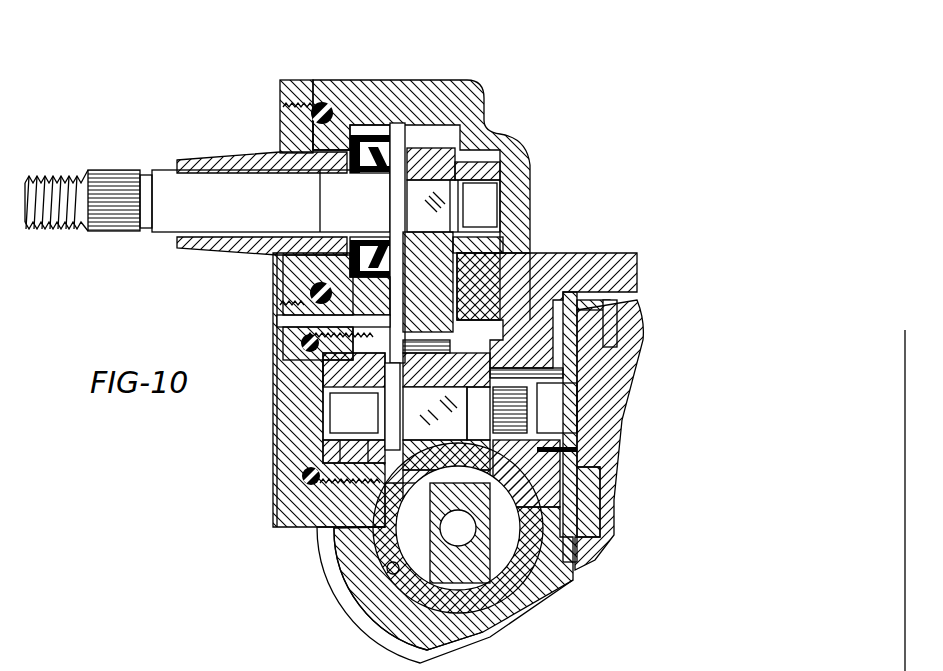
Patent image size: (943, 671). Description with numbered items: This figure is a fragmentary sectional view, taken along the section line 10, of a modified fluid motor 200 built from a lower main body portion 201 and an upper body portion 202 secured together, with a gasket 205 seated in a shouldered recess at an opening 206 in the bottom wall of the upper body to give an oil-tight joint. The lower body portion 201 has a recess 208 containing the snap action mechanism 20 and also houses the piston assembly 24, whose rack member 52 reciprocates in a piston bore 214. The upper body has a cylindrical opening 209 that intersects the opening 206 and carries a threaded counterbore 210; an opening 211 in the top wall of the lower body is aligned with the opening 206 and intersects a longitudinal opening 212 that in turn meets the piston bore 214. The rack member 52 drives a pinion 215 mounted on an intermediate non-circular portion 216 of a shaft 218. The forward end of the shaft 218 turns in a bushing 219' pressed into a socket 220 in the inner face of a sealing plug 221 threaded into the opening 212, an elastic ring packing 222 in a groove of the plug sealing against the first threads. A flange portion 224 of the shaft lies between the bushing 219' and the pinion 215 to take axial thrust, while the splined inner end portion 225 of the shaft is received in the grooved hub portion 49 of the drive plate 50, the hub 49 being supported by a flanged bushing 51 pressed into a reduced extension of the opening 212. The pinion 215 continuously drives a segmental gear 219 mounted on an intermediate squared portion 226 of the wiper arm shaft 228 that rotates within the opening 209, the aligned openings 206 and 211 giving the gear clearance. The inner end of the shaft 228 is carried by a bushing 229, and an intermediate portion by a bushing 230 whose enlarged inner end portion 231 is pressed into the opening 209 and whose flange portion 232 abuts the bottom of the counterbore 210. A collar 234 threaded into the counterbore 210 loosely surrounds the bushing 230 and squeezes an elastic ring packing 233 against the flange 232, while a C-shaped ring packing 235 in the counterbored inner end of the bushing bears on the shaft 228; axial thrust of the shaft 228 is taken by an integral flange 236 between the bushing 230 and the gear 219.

The section line 10 is at (367, 664).
The snap action mechanism 20 is at (631, 357).
The piston assembly 24 is at (512, 542).
The hub portion 49 is at (580, 472).
The drive plate 50 is at (560, 377).
The flanged bushing 51 is at (570, 451).
The rack member 52 is at (478, 583).
The fluid motor 200 is at (602, 207).
The lower main body portion 201 is at (285, 518).
The upper body portion 202 is at (435, 92).
The gasket 205 is at (570, 262).
The opening 206 is at (520, 262).
The recess 208 is at (640, 306).
The cylindrical opening 209 is at (278, 131).
The threaded counterbore 210 is at (300, 118).
The opening 211 is at (283, 318).
The longitudinal opening 212 is at (280, 346).
The piston bore 214 is at (330, 395).
The pinion 215 is at (325, 537).
The intermediate non-circular portion 216 is at (442, 421).
The shaft 218 is at (328, 440).
The segmental gear 219 is at (488, 136).
The bushing 219' is at (291, 455).
The socket 220 is at (300, 367).
The sealing plug 221 is at (300, 412).
The elastic ring packing 222 is at (330, 487).
The flange portion 224 is at (310, 475).
The splined inner end portion 225 is at (560, 422).
The intermediate squared portion 226 is at (420, 213).
The wiper arm shaft 228 is at (160, 238).
The bushing 229 is at (505, 173).
The bushing 230 is at (198, 165).
The enlarged inner end portion 231 is at (375, 140).
The flange portion 232 is at (352, 128).
The elastic ring packing 233 is at (310, 100).
The collar 234 is at (300, 120).
The ring packing 235 is at (370, 130).
The integral flange 236 is at (398, 128).